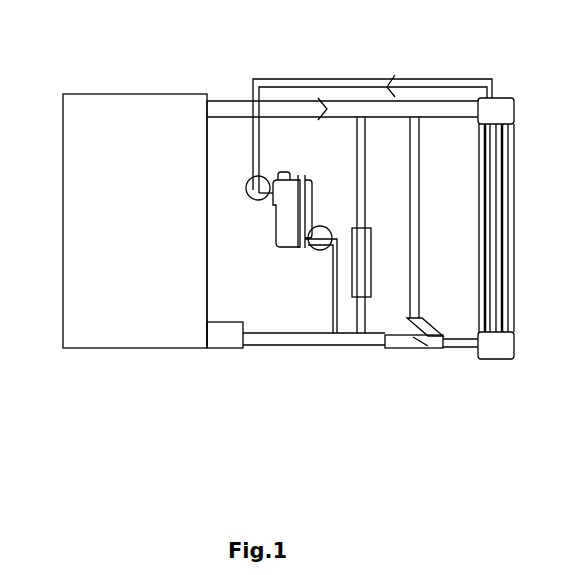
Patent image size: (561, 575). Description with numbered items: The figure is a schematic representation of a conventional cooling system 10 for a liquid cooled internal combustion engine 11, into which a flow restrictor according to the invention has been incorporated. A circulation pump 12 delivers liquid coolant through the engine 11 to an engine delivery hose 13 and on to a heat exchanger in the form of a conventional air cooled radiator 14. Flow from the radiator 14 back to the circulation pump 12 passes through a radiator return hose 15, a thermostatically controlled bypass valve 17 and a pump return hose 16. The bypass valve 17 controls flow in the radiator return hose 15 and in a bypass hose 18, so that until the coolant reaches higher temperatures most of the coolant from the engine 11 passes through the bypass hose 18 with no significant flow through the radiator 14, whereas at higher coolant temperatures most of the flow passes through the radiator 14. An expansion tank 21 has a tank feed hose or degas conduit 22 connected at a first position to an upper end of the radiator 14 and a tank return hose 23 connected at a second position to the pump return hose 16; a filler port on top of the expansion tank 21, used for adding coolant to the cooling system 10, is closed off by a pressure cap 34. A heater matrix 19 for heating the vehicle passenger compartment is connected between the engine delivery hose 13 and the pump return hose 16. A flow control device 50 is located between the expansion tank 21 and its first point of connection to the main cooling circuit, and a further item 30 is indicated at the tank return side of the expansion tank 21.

The cooling system 10 is at (100, 390).
The internal combustion engine 11 is at (143, 229).
The circulation pump 12 is at (230, 348).
The engine delivery hose 13 is at (228, 108).
The radiator 14 is at (521, 224).
The radiator return hose 15 is at (462, 349).
The pump return hose 16 is at (305, 345).
The bypass valve 17 is at (408, 344).
The bypass hose 18 is at (417, 270).
The heater matrix 19 is at (368, 266).
The expansion tank 21 is at (309, 200).
The tank feed hose 22 is at (257, 157).
The tank return hose 23 is at (330, 265).
The sensor 30 is at (332, 229).
The pressure cap 34 is at (292, 176).
The flow control device 50 is at (244, 181).